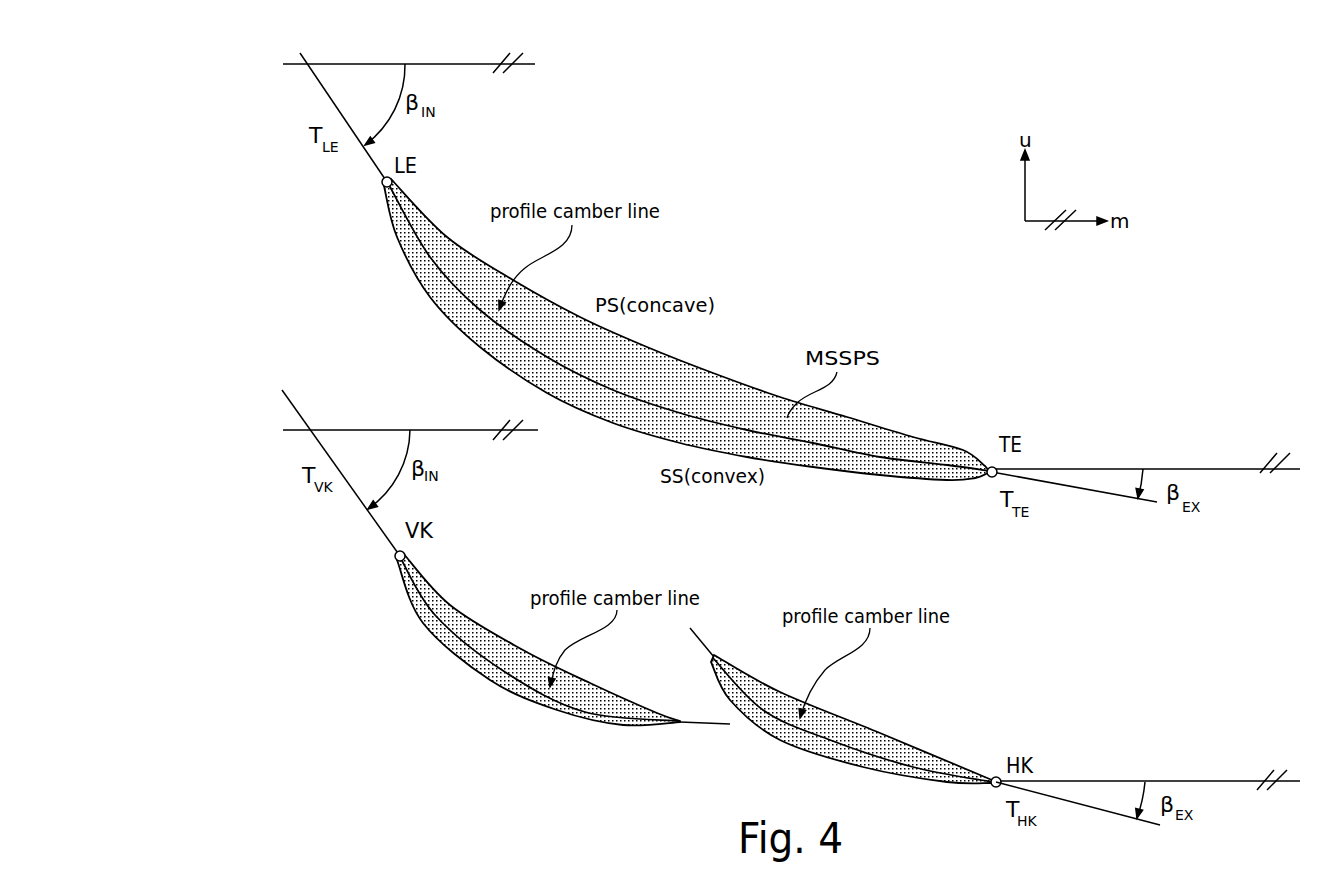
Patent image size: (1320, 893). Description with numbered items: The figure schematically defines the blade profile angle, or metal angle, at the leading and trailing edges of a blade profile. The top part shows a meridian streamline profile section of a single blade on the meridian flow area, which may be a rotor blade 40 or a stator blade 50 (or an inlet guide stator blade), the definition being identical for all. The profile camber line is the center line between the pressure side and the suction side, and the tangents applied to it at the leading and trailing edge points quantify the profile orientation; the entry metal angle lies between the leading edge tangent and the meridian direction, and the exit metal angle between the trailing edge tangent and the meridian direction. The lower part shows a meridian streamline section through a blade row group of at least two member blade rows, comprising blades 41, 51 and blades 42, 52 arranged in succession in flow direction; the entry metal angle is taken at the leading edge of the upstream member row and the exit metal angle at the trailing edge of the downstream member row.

The rotor blade 40 is at (689, 328).
The stator blade 50 is at (720, 377).
The blade of upstream member blade row 41 is at (562, 637).
The blade of upstream member blade row 51 is at (462, 607).
The blade of downstream member blade row 42 is at (845, 707).
The blade of downstream member blade row 52 is at (887, 733).